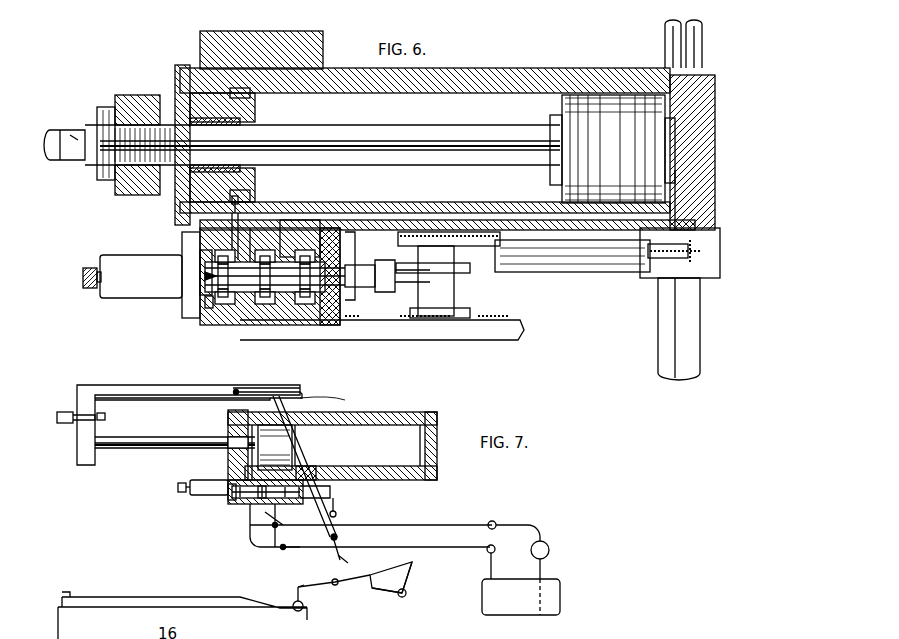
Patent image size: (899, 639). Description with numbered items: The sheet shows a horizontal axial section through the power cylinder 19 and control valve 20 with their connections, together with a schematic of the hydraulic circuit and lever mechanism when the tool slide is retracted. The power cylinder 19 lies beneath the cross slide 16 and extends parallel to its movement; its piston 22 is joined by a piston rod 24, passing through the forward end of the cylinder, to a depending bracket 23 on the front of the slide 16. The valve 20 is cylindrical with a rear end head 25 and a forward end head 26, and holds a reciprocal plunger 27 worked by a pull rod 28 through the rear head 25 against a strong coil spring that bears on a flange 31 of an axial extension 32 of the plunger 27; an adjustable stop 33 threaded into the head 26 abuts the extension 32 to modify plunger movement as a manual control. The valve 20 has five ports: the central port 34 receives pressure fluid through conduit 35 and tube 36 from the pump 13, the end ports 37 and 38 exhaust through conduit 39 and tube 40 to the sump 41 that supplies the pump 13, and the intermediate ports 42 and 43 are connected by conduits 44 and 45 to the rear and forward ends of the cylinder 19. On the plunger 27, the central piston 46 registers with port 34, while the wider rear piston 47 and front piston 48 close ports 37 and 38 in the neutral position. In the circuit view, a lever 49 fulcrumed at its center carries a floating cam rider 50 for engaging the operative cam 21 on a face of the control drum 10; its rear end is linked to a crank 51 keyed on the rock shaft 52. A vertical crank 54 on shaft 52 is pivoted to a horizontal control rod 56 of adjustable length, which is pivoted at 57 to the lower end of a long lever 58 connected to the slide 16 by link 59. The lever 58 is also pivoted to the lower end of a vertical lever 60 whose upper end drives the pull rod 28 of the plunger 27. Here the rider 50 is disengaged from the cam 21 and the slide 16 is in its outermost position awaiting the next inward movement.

In FIG. 7, the control drum 10 is at (130, 610).
In FIG. 7, the variable displacement hydraulic pump 13 is at (550, 546).
In FIG. 7, the cross slide 16 is at (120, 385).
In FIG. 6, the power cylinder 19 is at (515, 100).
In FIG. 7, the power cylinder 19 is at (362, 412).
In FIG. 6, the control valve 20 is at (200, 322).
In FIG. 7, the control valve 20 is at (235, 503).
In FIG. 7, the cam 21 is at (186, 597).
In FIG. 6, the piston 22 is at (608, 100).
In FIG. 7, the piston 22 is at (256, 430).
In FIG. 6, the depending bracket 23 is at (136, 92).
In FIG. 7, the depending bracket 23 is at (78, 430).
In FIG. 6, the piston rod 24 is at (358, 128).
In FIG. 7, the piston rod 24 is at (160, 437).
In FIG. 6, the rear end head 25 is at (340, 312).
In FIG. 6, the forward end head 26 is at (182, 312).
In FIG. 6, the plunger 27 is at (230, 270).
In FIG. 7, the plunger 27 is at (250, 503).
In FIG. 6, the pull rod 28 is at (350, 290).
In FIG. 7, the pull rod 28 is at (332, 494).
In FIG. 6, the flange 31 is at (128, 262).
In FIG. 6, the axial extension 32 is at (205, 276).
In FIG. 6, the adjustable stop 33 is at (82, 282).
In FIG. 7, the adjustable stop 33 is at (178, 487).
In FIG. 6, the central port 34 is at (252, 325).
In FIG. 7, the conduit 35 is at (418, 524).
In FIG. 7, the tube 36 is at (495, 520).
In FIG. 6, the rear end port 37 is at (322, 326).
In FIG. 6, the front end port 38 is at (208, 325).
In FIG. 7, the conduit 39 is at (294, 552).
In FIG. 7, the tube 40 is at (488, 553).
In FIG. 7, the sump 41 is at (562, 595).
In FIG. 6, the rear intermediate port 42 is at (350, 245).
In FIG. 6, the front intermediate port 43 is at (240, 250).
In FIG. 6, the conduit 44 is at (418, 222).
In FIG. 7, the conduit 44 is at (385, 468).
In FIG. 6, the conduit 45 is at (240, 218).
In FIG. 7, the conduit 45 is at (240, 470).
In FIG. 6, the central piston 46 is at (225, 325).
In FIG. 7, the central piston 46 is at (262, 504).
In FIG. 6, the rear piston 47 is at (282, 325).
In FIG. 7, the rear piston 47 is at (310, 468).
In FIG. 6, the front piston 48 is at (200, 290).
In FIG. 7, the front piston 48 is at (230, 496).
In FIG. 7, the lever 49 is at (320, 584).
In FIG. 7, the cam rider 50 is at (296, 589).
In FIG. 7, the crank 51 is at (385, 592).
In FIG. 6, the rock shaft 52 is at (656, 325).
In FIG. 7, the rock shaft 52 is at (406, 596).
In FIG. 6, the crank 54 is at (718, 262).
In FIG. 7, the crank 54 is at (410, 575).
In FIG. 6, the control rod 56 is at (612, 272).
In FIG. 7, the control rod 56 is at (382, 566).
In FIG. 7, the pivot 57 is at (348, 563).
In FIG. 6, the long lever 58 is at (462, 250).
In FIG. 7, the long lever 58 is at (290, 408).
In FIG. 7, the link 59 is at (262, 398).
In FIG. 7, the vertical lever 60 is at (337, 514).